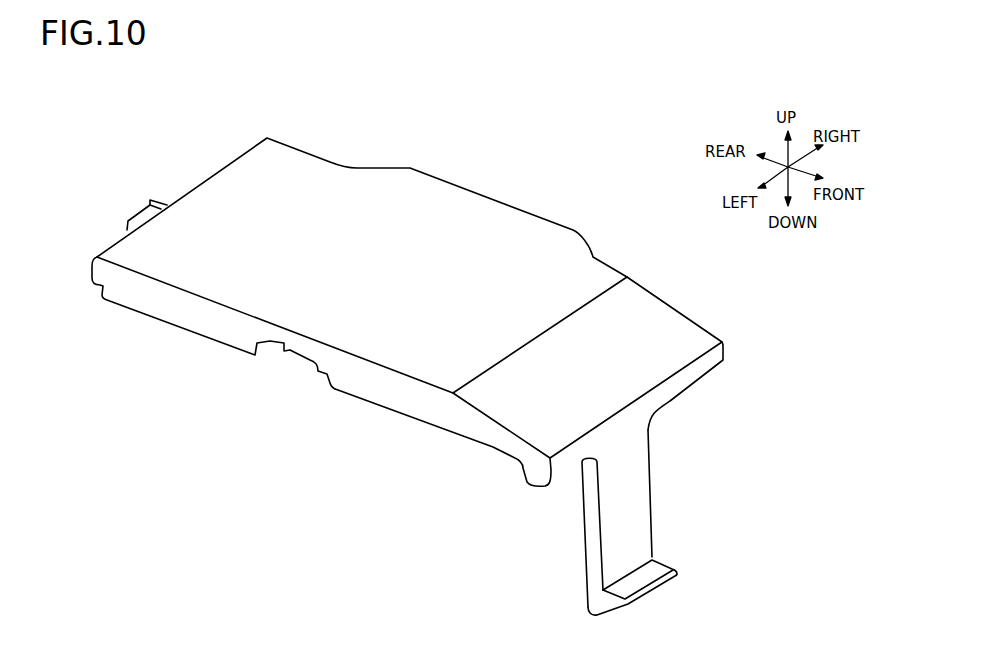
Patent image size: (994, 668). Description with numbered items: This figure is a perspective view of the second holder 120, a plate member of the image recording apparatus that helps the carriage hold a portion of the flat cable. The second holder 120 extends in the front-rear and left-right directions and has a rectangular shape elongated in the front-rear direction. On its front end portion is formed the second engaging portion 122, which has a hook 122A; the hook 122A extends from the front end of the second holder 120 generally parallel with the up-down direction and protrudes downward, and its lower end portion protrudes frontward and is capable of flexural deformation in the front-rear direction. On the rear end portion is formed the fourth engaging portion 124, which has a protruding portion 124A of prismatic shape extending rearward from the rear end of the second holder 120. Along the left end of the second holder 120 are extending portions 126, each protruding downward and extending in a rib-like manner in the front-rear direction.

The second holder 120 is at (430, 247).
The second engaging portion 122 is at (651, 478).
The hook 122A is at (647, 593).
The fourth engaging portion 124 is at (153, 201).
The protruding portion 124A is at (147, 208).
The extending portion 126 is at (180, 317).